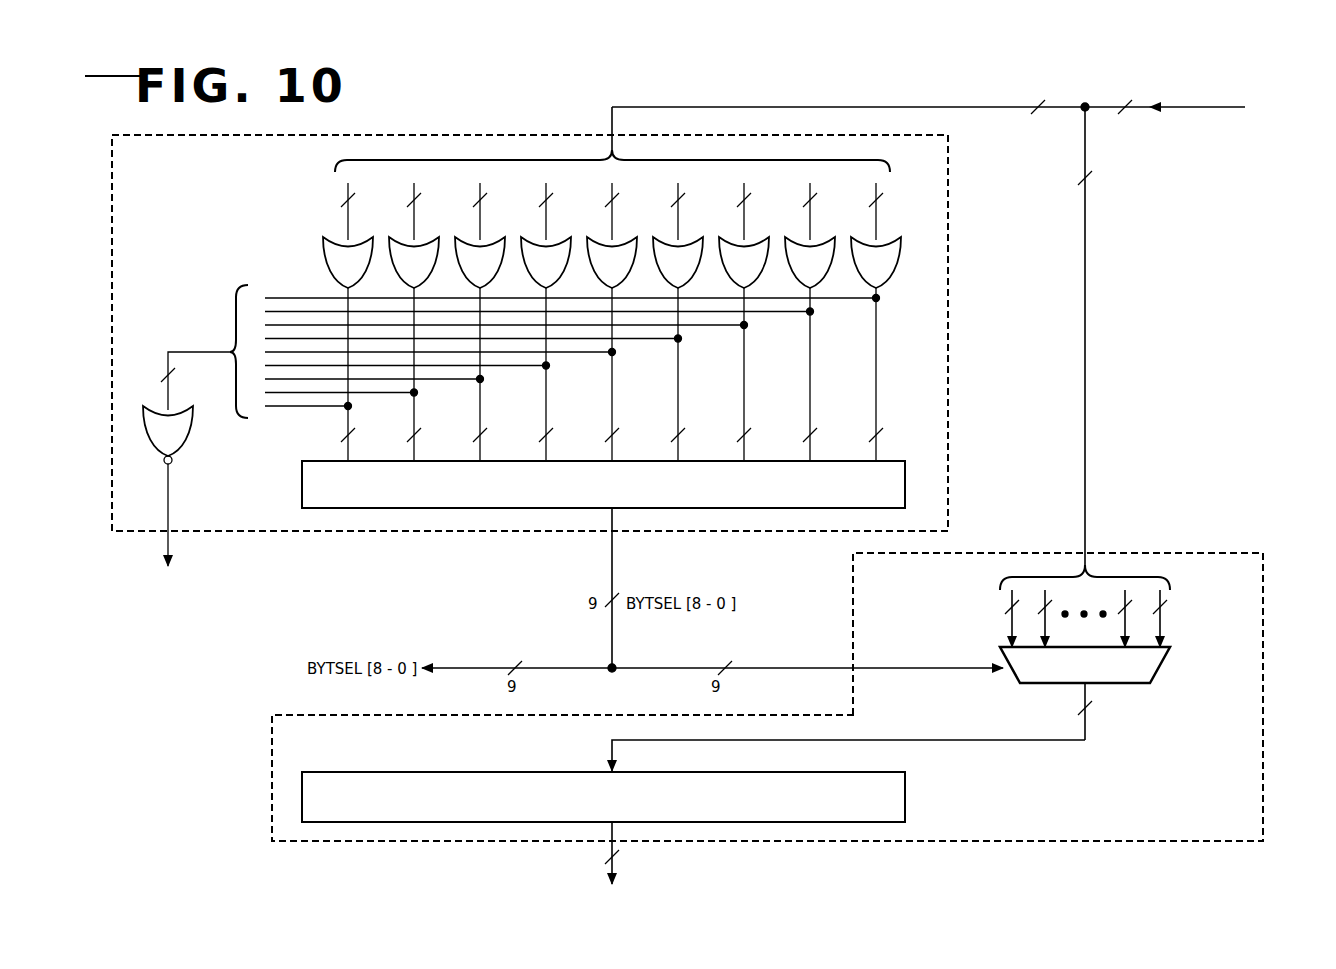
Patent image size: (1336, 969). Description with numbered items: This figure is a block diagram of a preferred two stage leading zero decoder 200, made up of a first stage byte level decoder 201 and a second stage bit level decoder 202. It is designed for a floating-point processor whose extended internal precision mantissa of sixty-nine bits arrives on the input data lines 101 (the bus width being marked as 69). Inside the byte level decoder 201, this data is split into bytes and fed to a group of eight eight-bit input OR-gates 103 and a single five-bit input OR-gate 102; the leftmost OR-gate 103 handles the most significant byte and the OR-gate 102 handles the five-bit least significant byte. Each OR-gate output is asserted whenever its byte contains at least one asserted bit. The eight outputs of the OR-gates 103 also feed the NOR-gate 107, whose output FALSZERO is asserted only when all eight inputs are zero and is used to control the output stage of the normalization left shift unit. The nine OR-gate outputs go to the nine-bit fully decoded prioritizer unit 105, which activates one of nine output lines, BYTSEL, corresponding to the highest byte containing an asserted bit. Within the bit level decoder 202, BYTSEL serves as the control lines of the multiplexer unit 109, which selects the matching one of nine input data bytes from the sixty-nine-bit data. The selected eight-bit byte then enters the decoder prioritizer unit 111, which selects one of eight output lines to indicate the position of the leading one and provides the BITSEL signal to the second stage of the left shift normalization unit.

The input data lines 101 is at (1185, 107).
The 69-bit data bus 69 is at (881, 332).
The 8-bit input OR-gates 103 is at (361, 274).
The 5-bit input OR-gate 102 is at (889, 274).
The NOR-gate 107 is at (181, 439).
The 9-bit fully decoded prioritizer unit 105 is at (871, 495).
The first stage byte level decoder 201 is at (948, 318).
The two stage leading zero decoder 200 is at (1220, 304).
The multiplexer unit 109 is at (1165, 676).
The decoder prioritizer unit 111 is at (905, 796).
The second stage bit level decoder 202 is at (1170, 809).